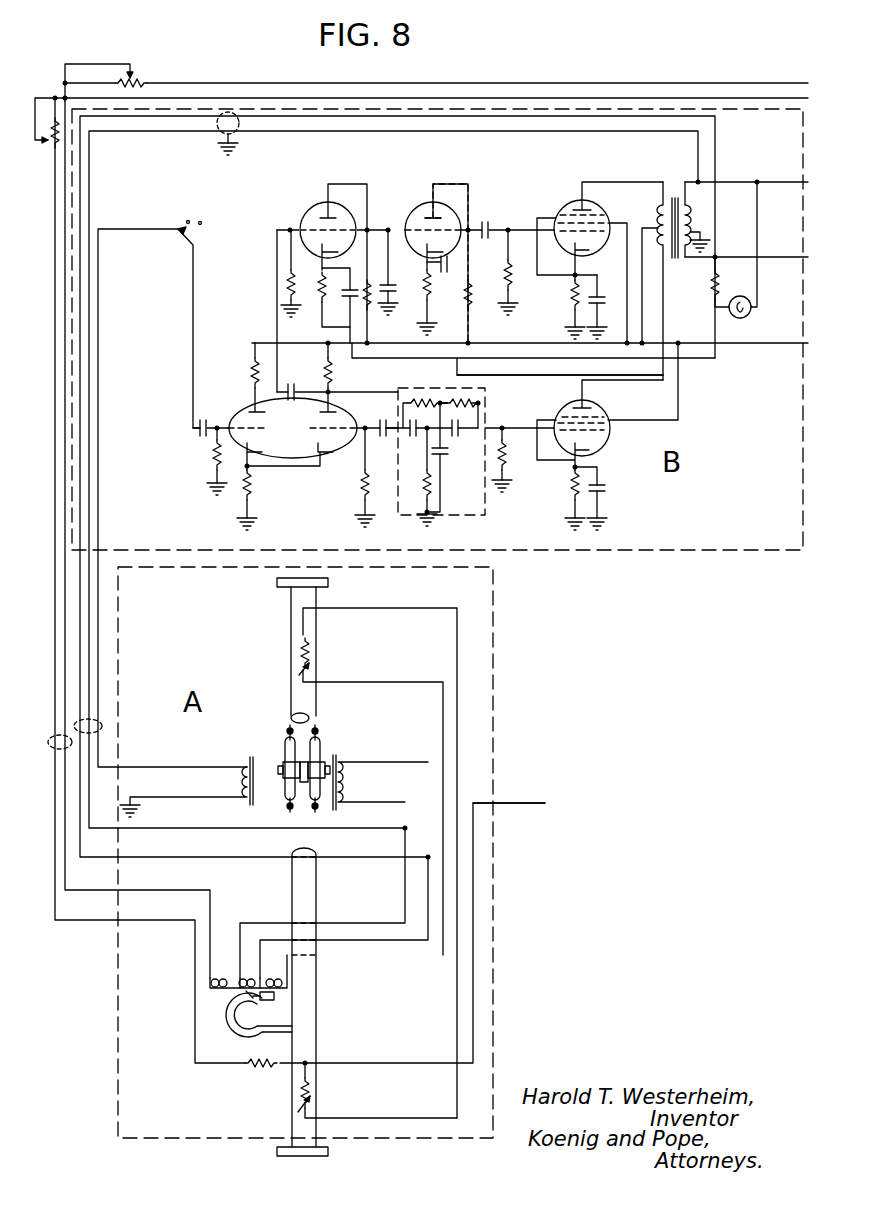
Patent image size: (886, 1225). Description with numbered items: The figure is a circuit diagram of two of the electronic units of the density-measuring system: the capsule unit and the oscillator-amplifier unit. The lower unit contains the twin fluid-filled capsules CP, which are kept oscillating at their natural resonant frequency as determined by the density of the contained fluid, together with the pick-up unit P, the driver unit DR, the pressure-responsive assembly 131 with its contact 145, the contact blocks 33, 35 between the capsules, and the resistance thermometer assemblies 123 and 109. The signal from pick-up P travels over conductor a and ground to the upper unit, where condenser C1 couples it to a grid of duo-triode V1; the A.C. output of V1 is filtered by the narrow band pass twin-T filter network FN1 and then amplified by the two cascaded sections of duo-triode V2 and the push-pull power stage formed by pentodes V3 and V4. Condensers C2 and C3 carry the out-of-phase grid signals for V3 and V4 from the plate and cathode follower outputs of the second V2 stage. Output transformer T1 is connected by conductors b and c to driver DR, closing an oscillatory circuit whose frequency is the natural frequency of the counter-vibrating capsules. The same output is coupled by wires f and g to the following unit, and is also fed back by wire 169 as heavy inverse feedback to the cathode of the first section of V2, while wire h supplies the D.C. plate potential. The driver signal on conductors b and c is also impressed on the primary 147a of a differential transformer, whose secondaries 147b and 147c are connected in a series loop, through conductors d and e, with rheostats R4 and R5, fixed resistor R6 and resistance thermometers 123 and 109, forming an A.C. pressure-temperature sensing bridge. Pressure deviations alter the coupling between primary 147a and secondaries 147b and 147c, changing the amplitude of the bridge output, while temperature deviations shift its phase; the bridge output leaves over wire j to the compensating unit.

The resistance thermometer assembly 123 is at (291, 675).
The contact block 33 is at (286, 764).
The contact block 35 is at (332, 763).
The capsules CP is at (285, 745).
The pick-up unit P is at (245, 780).
The driver unit DR is at (345, 777).
The primary winding of differential transformer 147a is at (242, 988).
The secondary winding of differential transformer 147b is at (210, 980).
The secondary winding of differential transformer 147c is at (282, 975).
The contact 145 is at (264, 1007).
The pressure-responsive assembly 131 is at (230, 1028).
The resistance thermometer assembly 109 is at (318, 1080).
The feedback wire 169 is at (508, 366).
The rheostat R4 is at (146, 81).
The rheostat R5 is at (54, 155).
The fixed resistor R6 is at (259, 1069).
The condenser C1 is at (216, 422).
The condenser C2 is at (443, 281).
The condenser C3 is at (500, 222).
The duo-triode vacuum tube V1 is at (324, 462).
The duo-triode vacuum tube V2 is at (379, 205).
The pentode V3 is at (566, 206).
The pentode V4 is at (568, 404).
The output transformer T1 is at (673, 194).
The twin-T filter network FN1 is at (466, 517).
The conductor a is at (175, 226).
The conductor b is at (698, 147).
The conductor c is at (715, 150).
The conductor d is at (761, 83).
The conductor e is at (765, 99).
The wire f is at (787, 182).
The wire g is at (790, 257).
The wire h is at (786, 343).
The wire j is at (526, 802).